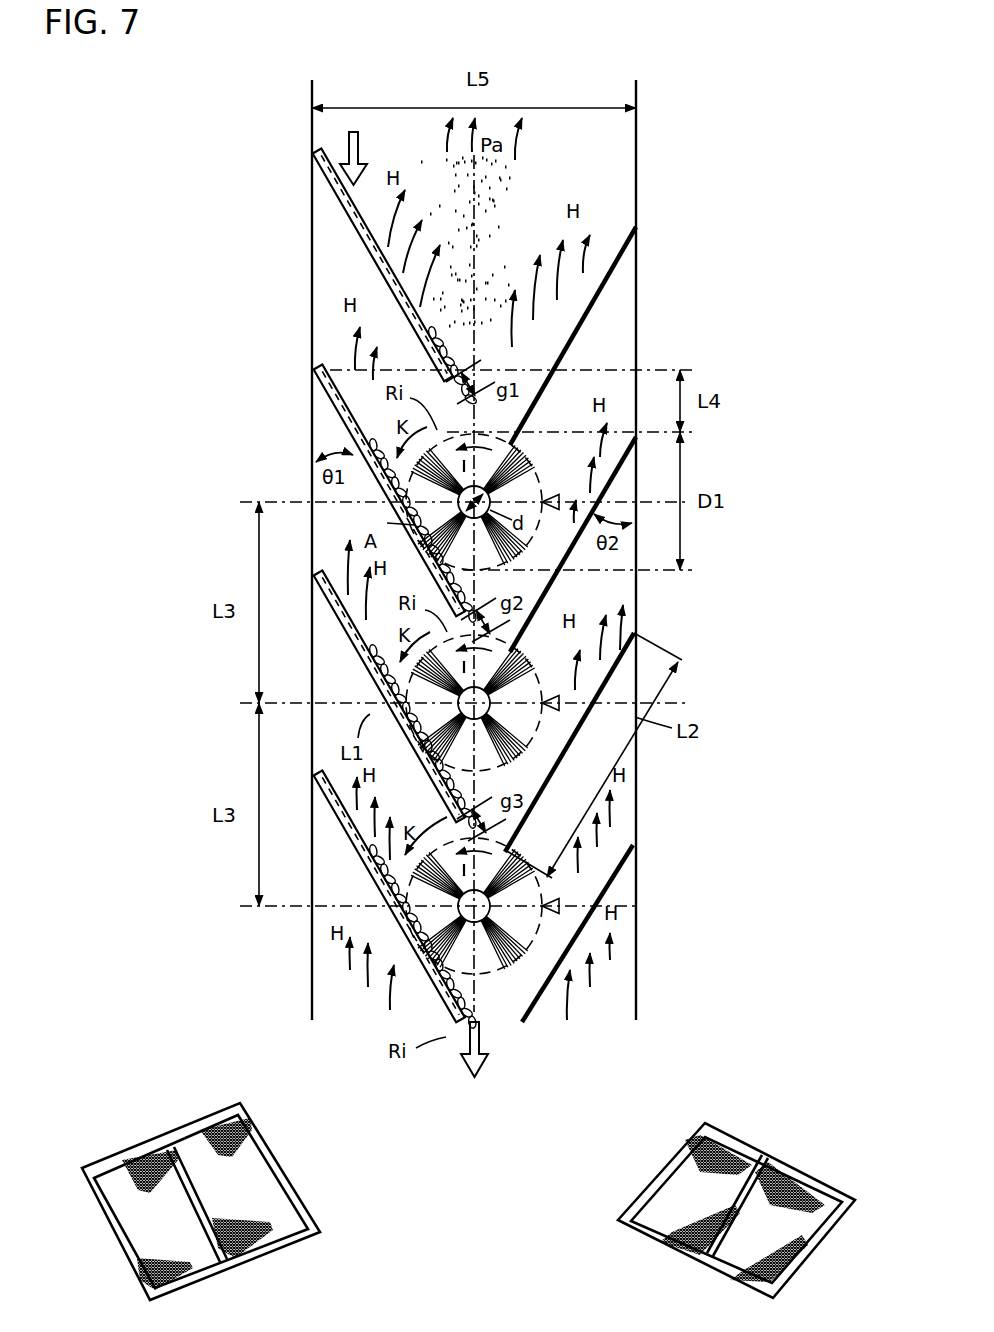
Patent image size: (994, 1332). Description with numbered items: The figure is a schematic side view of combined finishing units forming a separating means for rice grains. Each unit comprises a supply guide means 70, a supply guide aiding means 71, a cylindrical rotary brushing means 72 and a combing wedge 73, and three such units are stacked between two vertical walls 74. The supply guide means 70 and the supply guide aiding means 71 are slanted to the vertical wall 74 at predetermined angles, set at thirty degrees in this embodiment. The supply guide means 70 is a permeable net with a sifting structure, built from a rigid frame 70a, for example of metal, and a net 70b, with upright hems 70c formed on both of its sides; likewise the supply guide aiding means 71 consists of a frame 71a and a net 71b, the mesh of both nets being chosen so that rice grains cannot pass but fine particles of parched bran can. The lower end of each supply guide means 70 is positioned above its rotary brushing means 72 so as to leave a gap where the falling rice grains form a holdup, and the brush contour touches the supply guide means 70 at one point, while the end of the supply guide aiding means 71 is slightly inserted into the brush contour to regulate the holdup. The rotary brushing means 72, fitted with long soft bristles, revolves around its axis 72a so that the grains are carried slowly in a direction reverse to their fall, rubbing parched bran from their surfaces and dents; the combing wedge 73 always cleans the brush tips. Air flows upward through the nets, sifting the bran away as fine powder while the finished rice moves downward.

The supply guide means 70 is at (348, 223).
The frame 70a is at (190, 1160).
The net 70b is at (250, 1252).
The upright hems 70c is at (280, 1160).
The supply guide aiding means 71 is at (622, 250).
The frame 71a is at (511, 446).
The net 71b is at (745, 1264).
The rotary brushing means 72 is at (532, 458).
The axis 72a is at (512, 542).
The combing wedge 73 is at (554, 496).
The vertical wall 74 is at (311, 340).